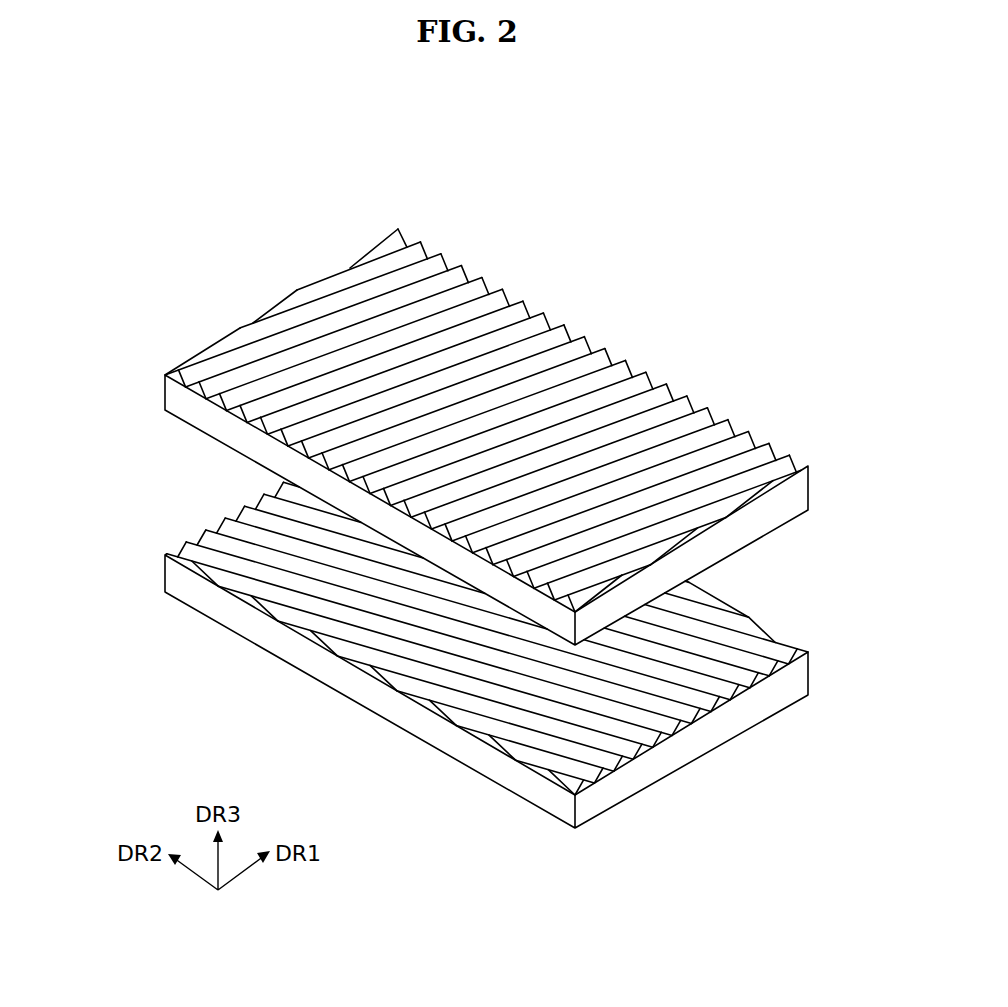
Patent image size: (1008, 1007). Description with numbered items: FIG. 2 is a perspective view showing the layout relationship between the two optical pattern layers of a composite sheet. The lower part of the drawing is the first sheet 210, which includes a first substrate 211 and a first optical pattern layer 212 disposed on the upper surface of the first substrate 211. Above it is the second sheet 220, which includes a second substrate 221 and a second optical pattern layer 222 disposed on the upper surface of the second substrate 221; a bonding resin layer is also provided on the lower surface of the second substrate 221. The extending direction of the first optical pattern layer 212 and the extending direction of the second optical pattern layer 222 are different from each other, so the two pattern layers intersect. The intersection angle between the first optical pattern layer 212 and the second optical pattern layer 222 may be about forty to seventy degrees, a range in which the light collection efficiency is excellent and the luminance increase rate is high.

The second sheet 220 is at (490, 424).
The second optical pattern layer 222 is at (213, 346).
The second substrate 221 is at (802, 494).
The first sheet 210 is at (463, 655).
The first optical pattern layer 212 is at (203, 562).
The first substrate 211 is at (802, 679).